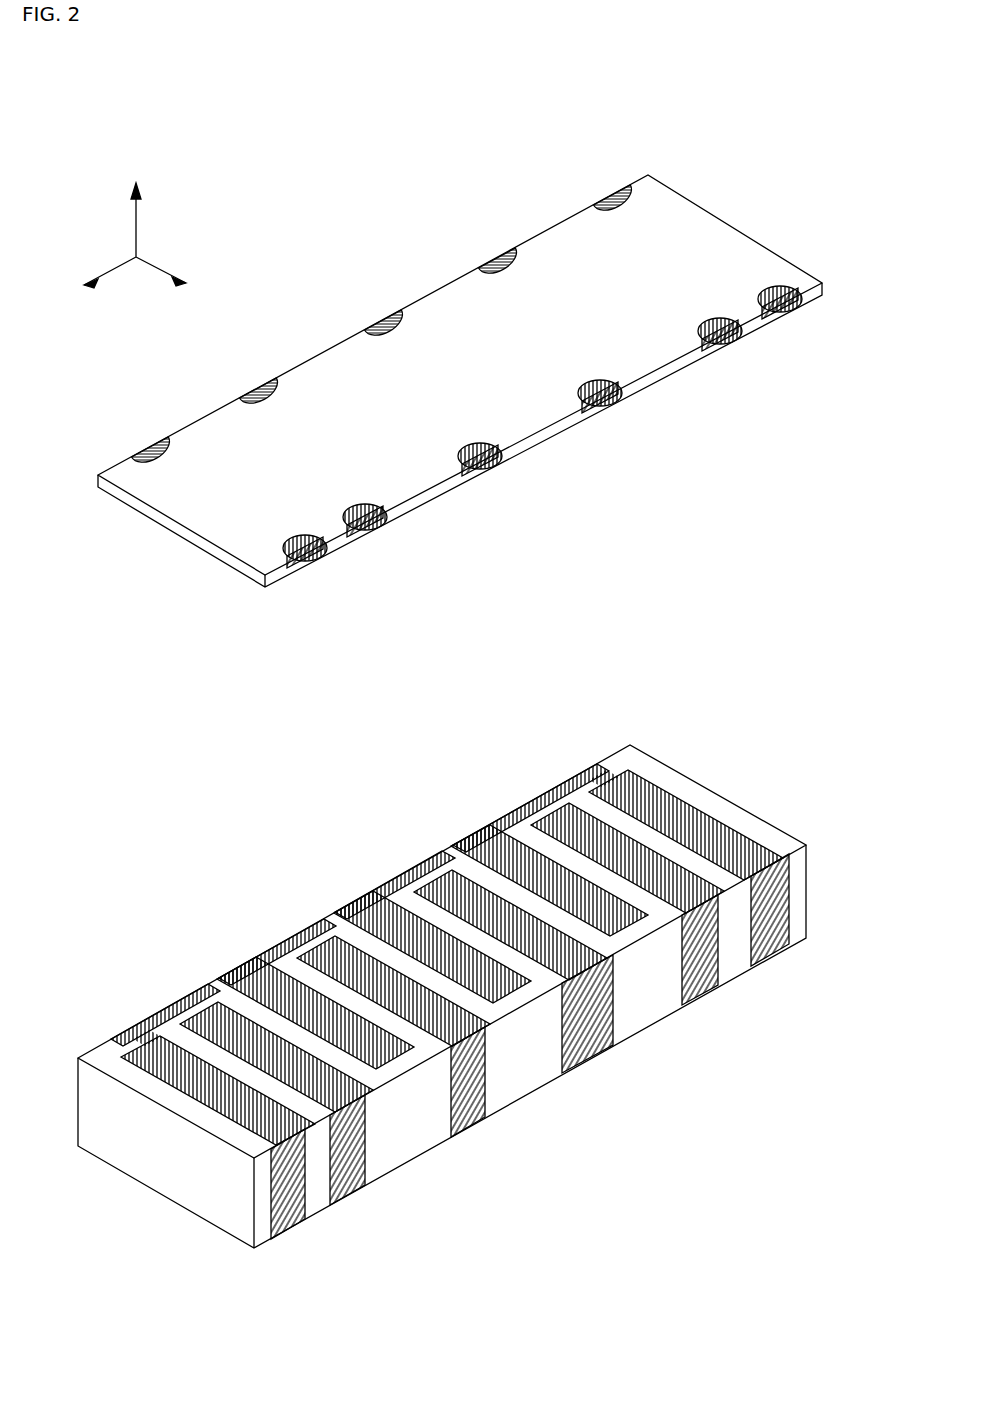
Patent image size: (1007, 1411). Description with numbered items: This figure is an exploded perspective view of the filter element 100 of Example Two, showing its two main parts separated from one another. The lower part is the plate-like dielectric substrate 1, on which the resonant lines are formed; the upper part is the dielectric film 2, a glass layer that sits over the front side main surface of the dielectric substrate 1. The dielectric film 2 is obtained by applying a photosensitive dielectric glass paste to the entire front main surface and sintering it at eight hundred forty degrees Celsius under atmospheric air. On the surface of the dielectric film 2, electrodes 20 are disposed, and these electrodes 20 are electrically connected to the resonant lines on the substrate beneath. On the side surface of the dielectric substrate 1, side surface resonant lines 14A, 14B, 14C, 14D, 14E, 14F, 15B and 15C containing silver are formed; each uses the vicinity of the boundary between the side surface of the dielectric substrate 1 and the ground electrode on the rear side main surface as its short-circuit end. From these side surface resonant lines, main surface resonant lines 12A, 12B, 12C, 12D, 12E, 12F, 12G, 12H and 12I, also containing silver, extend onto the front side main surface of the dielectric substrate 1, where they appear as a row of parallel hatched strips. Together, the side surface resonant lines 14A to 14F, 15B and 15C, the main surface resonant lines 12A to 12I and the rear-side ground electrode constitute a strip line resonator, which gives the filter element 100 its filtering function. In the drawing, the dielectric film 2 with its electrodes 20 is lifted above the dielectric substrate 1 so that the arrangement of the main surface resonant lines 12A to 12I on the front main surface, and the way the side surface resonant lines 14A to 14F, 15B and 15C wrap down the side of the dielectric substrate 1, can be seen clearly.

The filter element 100 is at (296, 250).
The dielectric substrate 1 is at (492, 820).
The dielectric film 2 is at (531, 462).
The electrode 20 is at (390, 332).
The main surface resonant line 12A is at (302, 1108).
The main surface resonant line 12B is at (344, 1084).
The main surface resonant line 12C is at (424, 1047).
The main surface resonant line 12D is at (464, 1020).
The main surface resonant line 12E is at (527, 989).
The main surface resonant line 12F is at (592, 956).
The main surface resonant line 12G is at (658, 915).
The main surface resonant line 12H is at (712, 879).
The main surface resonant line 12I is at (771, 846).
The side surface resonant line 14A is at (290, 1185).
The side surface resonant line 14B is at (352, 1160).
The side surface resonant line 14C is at (470, 1090).
The side surface resonant line 14D is at (597, 1053).
The side surface resonant line 14E is at (710, 987).
The side surface resonant line 14F is at (778, 940).
The side surface resonant line 15B is at (207, 983).
The side surface resonant line 15C is at (320, 915).